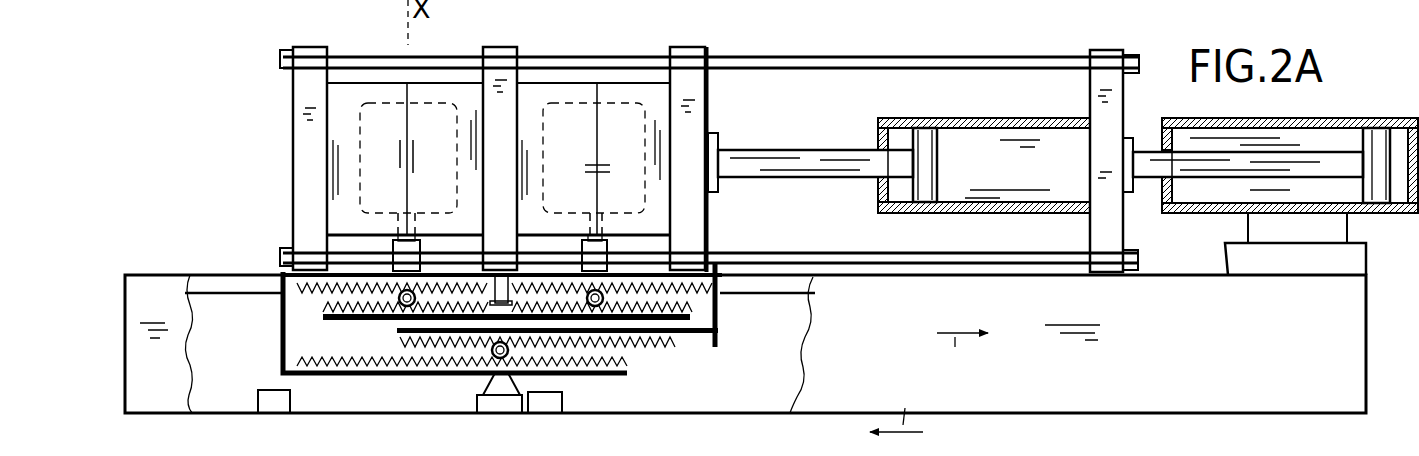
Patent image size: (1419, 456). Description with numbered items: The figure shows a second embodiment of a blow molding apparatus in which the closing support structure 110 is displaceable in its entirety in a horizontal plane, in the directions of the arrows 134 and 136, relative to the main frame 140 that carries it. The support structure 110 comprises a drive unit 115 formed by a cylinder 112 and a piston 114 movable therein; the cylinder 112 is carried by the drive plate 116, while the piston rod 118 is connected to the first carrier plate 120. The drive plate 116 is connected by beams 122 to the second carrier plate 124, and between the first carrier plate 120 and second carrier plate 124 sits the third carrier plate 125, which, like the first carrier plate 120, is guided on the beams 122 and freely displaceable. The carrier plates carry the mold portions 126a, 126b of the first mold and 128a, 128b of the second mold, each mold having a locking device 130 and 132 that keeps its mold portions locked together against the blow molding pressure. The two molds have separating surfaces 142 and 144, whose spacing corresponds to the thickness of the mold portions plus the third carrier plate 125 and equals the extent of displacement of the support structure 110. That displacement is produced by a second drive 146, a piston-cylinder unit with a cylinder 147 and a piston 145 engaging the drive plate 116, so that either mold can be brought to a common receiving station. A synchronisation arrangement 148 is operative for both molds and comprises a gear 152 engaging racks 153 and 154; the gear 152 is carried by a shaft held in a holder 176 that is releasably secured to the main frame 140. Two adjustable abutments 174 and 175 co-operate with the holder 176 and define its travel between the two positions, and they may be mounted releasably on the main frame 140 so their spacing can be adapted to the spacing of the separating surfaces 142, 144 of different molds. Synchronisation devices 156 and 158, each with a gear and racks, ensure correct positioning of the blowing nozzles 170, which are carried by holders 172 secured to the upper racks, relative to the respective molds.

The closing support structure 110 is at (806, 42).
The cylinder 112 is at (1000, 193).
The piston 114 is at (935, 155).
The drive unit 115 is at (980, 195).
The drive plate 116 is at (1113, 92).
The piston rod 118 is at (738, 160).
The first carrier plate 120 is at (700, 82).
The beams 122 is at (903, 66).
The second carrier plate 124 is at (300, 96).
The third carrier plate 125 is at (502, 88).
The mold portion 126a is at (647, 64).
The mold portion 126b is at (535, 102).
The mold portion 128a is at (355, 85).
The mold portion 128b is at (420, 90).
The locking device 130 is at (588, 158).
The locking device 132 is at (400, 162).
The arrow 134 is at (962, 358).
The arrow 136 is at (899, 407).
The main frame 140 is at (1243, 395).
The separating surface 142 is at (597, 130).
The separating surface 144 is at (407, 121).
The piston 145 is at (1373, 172).
The second drive 146 is at (1276, 122).
The cylinder 147 is at (1333, 138).
The synchronisation arrangement 148 is at (579, 395).
The gear 152 is at (490, 357).
The rack 153 is at (670, 337).
The rack 154 is at (397, 368).
The synchronisation device 156 is at (700, 322).
The synchronisation device 158 is at (314, 326).
The blowing nozzle 170 is at (407, 212).
The holder 172 is at (393, 258).
The adjustable abutment 174 is at (547, 409).
The adjustable abutment 175 is at (265, 408).
The holder 176 is at (492, 412).